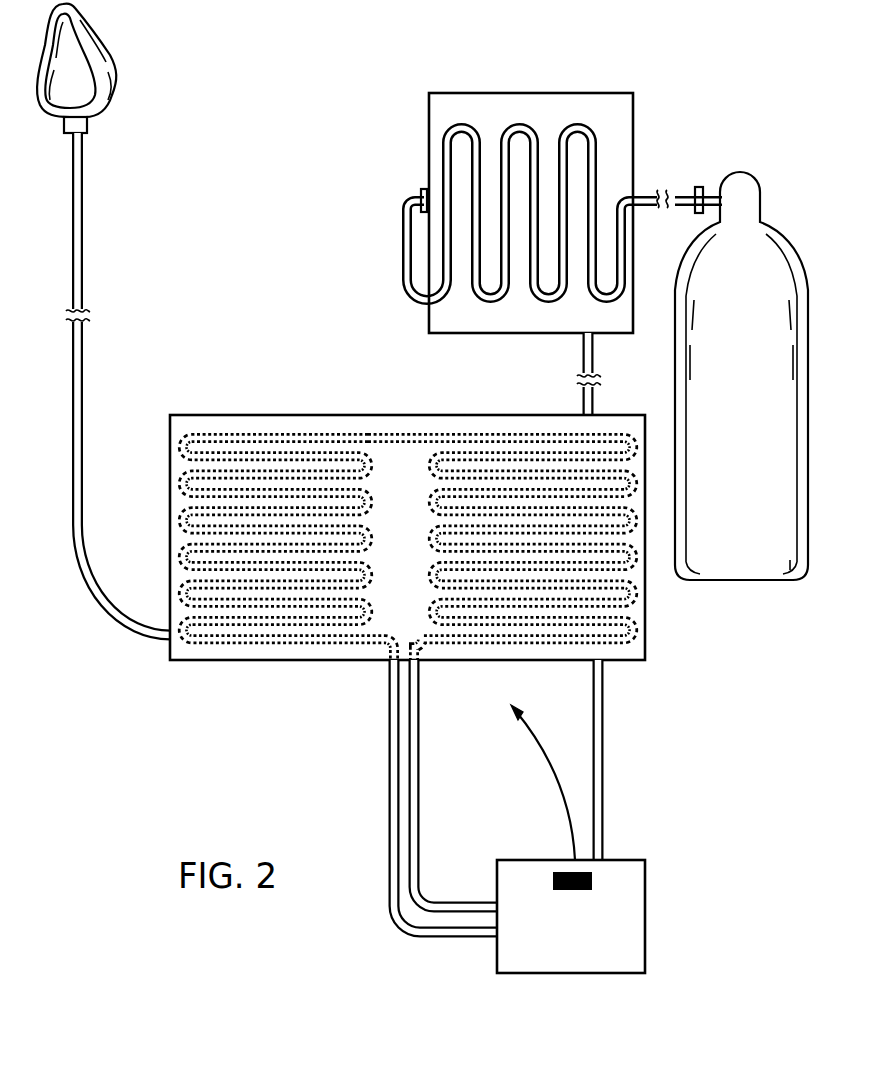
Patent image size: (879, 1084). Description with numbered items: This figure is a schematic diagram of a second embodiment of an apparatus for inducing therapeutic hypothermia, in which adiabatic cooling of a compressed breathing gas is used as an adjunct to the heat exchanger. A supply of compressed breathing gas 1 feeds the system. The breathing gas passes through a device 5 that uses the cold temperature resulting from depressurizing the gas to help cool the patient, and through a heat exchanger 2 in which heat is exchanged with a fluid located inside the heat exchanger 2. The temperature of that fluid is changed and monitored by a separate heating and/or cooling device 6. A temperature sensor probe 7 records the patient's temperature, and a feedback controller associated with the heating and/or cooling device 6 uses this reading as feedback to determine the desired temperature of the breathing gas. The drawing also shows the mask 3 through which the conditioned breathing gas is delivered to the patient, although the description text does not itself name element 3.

The supply of compressed breathing gas 1 is at (742, 583).
The heat exchanger 2 is at (175, 502).
The breathing mask 3 is at (113, 78).
The device using cold temperature from depressurizing the gas 5 is at (440, 115).
The heating and/or cooling device 6 is at (508, 962).
The temperature sensor probe 7 is at (551, 783).